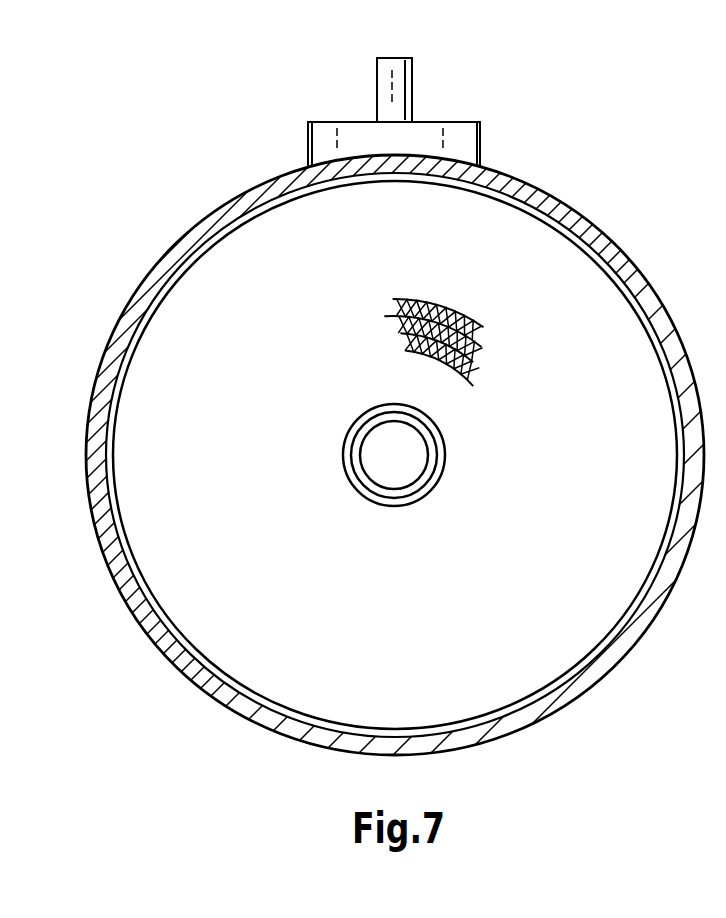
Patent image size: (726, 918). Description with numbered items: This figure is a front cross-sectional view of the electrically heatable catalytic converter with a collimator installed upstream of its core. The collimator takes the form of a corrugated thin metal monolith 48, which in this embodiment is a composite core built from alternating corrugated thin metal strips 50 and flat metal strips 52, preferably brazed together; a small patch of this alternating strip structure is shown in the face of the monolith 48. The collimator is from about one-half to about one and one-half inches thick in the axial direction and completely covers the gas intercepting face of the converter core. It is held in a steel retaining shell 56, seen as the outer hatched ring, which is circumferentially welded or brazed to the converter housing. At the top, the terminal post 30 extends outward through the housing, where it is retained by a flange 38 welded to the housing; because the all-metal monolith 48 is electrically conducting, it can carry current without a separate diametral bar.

The terminal post 30 is at (393, 90).
The flange 38 is at (458, 138).
The steel retaining shell 56 is at (580, 213).
The corrugated thin metal monolith 48 is at (598, 317).
The flat metal strips 52 is at (448, 307).
The corrugated thin metal strips 50 is at (473, 338).